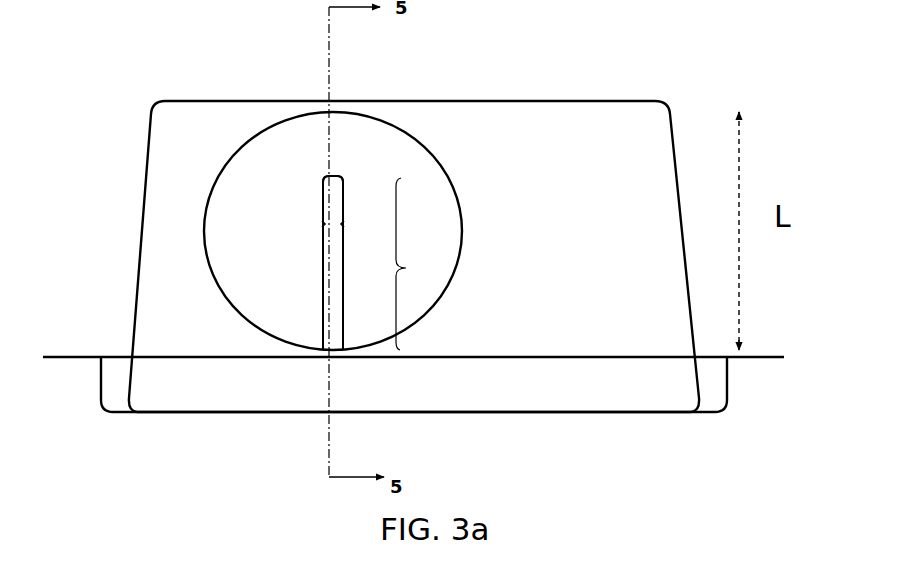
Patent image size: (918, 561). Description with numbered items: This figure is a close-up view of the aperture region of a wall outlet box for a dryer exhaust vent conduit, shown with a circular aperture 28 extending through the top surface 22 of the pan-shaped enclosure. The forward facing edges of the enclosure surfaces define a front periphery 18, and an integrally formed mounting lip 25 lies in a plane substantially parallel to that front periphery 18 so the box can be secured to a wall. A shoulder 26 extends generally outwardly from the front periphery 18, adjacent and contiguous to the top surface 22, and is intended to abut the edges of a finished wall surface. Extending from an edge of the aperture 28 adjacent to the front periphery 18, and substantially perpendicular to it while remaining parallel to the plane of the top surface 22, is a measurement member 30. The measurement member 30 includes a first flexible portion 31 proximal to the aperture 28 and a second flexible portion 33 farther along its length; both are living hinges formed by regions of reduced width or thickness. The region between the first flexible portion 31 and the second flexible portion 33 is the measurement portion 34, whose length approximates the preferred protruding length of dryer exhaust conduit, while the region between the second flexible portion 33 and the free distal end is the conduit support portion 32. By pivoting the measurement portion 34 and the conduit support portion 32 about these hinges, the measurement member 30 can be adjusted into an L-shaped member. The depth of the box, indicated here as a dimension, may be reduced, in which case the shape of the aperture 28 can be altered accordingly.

The front periphery 18 is at (320, 421).
The top surface 22 is at (217, 132).
The mounting lip 25 is at (751, 362).
The shoulder 26 is at (285, 387).
The aperture 28 is at (452, 177).
The measurement member 30 is at (420, 271).
The first flexible portion 31 is at (318, 352).
The conduit support portion 32 is at (318, 200).
The second flexible portion 33 is at (318, 224).
The measurement portion 34 is at (318, 283).